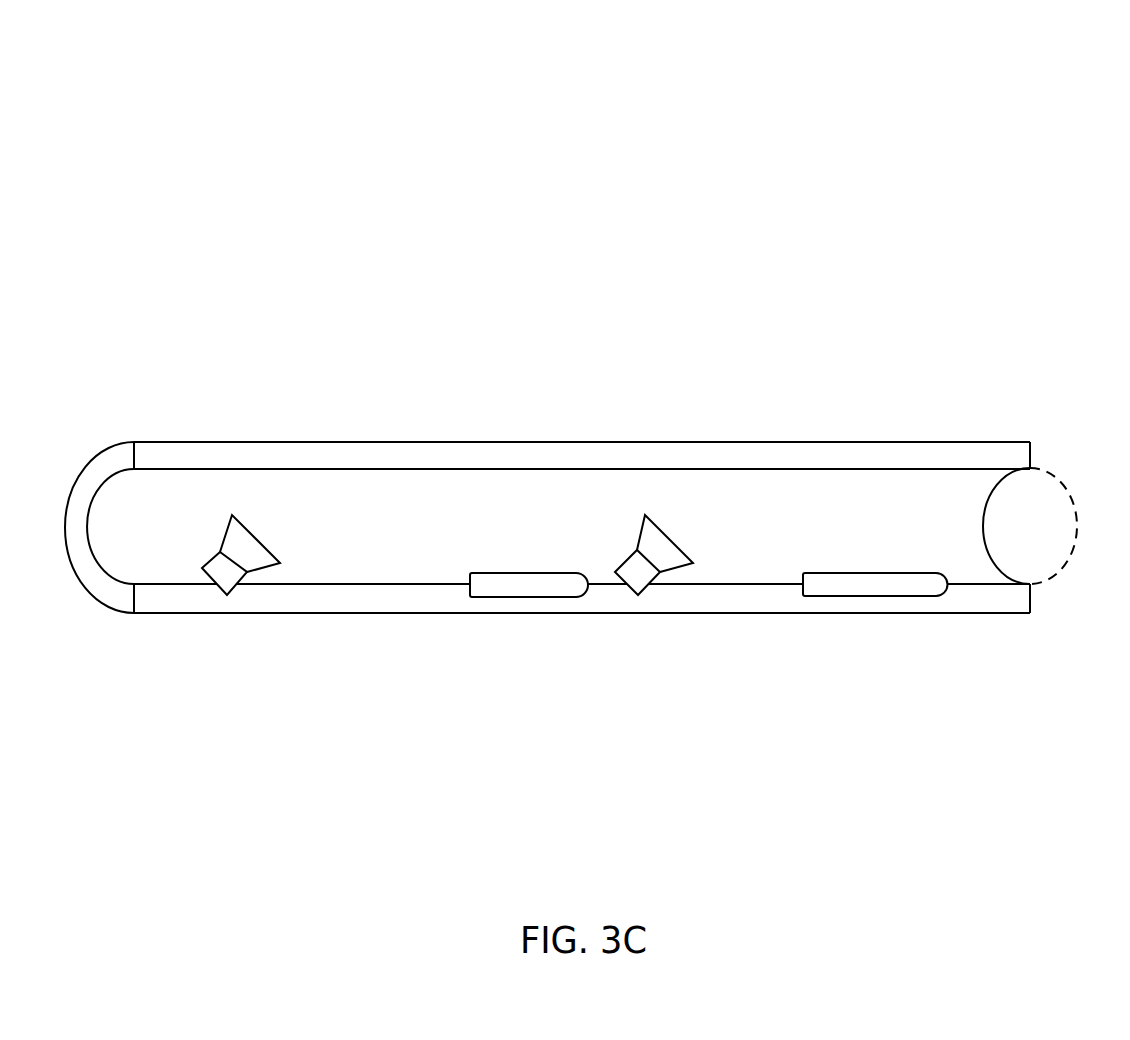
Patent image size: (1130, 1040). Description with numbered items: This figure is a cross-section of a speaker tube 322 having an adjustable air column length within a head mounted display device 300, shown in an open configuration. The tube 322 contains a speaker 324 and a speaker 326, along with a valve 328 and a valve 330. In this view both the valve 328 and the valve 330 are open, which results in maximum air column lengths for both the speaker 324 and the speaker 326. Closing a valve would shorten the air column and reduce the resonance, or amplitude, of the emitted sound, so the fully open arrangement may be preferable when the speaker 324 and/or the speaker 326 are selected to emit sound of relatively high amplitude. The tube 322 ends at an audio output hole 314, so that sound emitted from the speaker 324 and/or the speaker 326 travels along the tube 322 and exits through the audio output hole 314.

The electronic device 300 is at (1047, 76).
The audio output hole 314 is at (1030, 525).
The speaker tube 322 is at (270, 458).
The speaker 324 is at (223, 572).
The speaker 326 is at (640, 570).
The valve 328 is at (528, 587).
The valve 330 is at (862, 582).